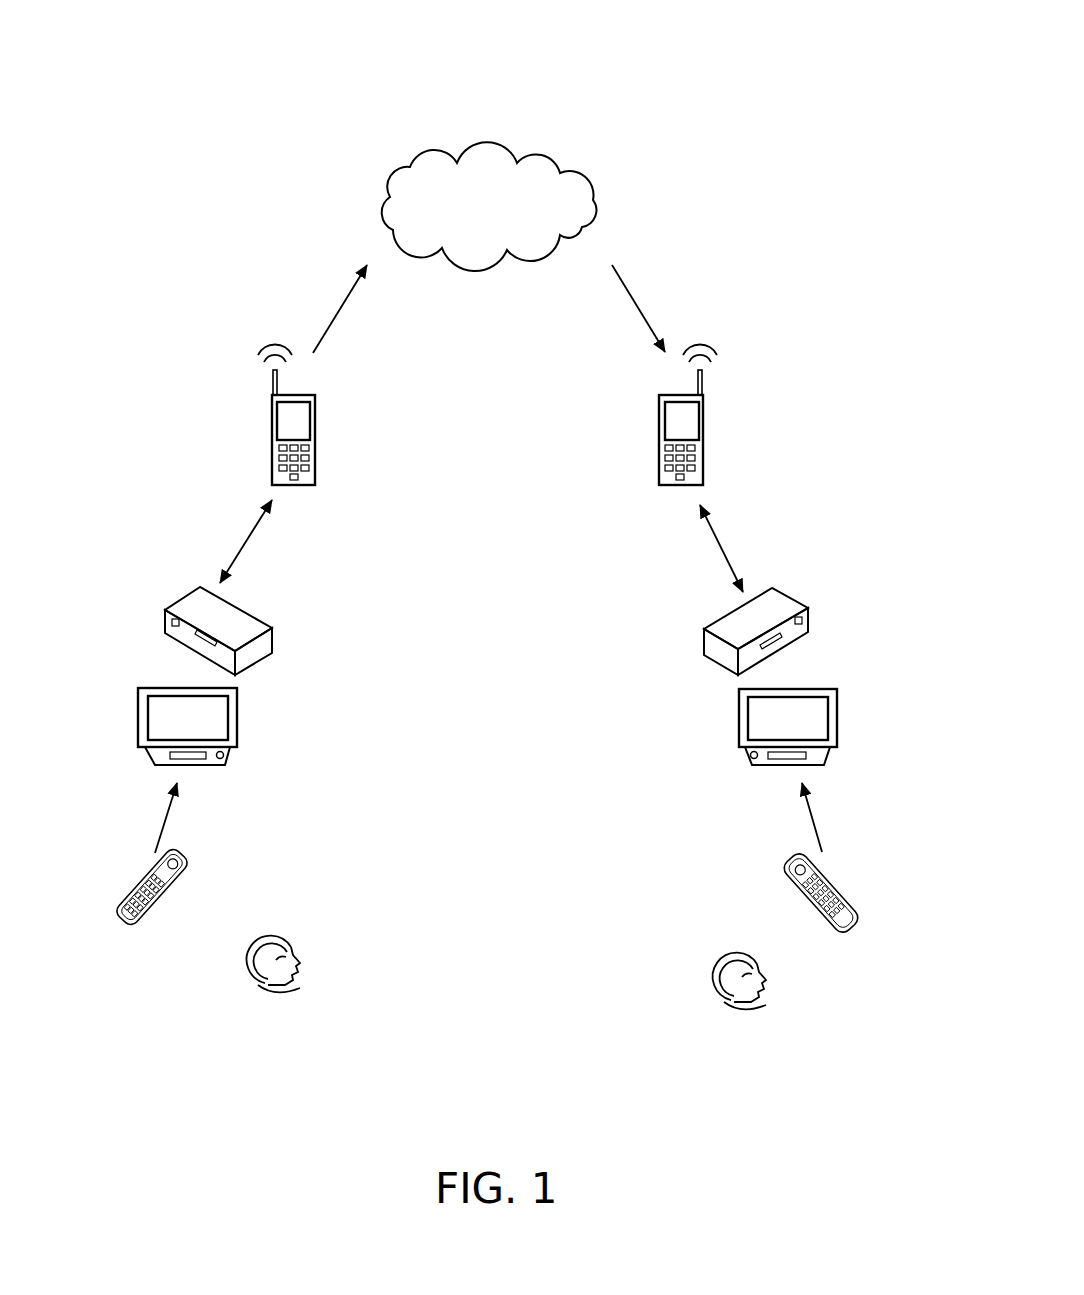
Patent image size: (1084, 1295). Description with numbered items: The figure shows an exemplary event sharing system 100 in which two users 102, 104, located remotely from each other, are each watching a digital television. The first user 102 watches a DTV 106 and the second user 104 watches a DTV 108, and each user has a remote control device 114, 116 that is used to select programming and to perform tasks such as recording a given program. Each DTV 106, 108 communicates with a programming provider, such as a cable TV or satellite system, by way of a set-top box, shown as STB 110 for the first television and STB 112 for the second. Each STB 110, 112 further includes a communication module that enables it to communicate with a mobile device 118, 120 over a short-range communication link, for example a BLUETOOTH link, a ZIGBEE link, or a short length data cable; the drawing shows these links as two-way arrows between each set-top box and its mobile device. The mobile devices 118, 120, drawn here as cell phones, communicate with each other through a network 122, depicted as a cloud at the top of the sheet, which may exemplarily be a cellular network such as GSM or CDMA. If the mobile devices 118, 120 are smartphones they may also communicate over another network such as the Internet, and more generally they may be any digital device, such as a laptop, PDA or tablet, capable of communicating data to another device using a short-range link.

The event sharing system 100 is at (481, 84).
The user 102 is at (250, 1004).
The user 104 is at (772, 1013).
The DTV 106 is at (154, 687).
The DTV 108 is at (826, 686).
The STB 110 is at (202, 593).
The STB 112 is at (777, 590).
The remote control device 114 is at (133, 859).
The remote control device 116 is at (843, 863).
The mobile device 118 is at (250, 406).
The mobile device 120 is at (723, 393).
The network 122 is at (507, 173).